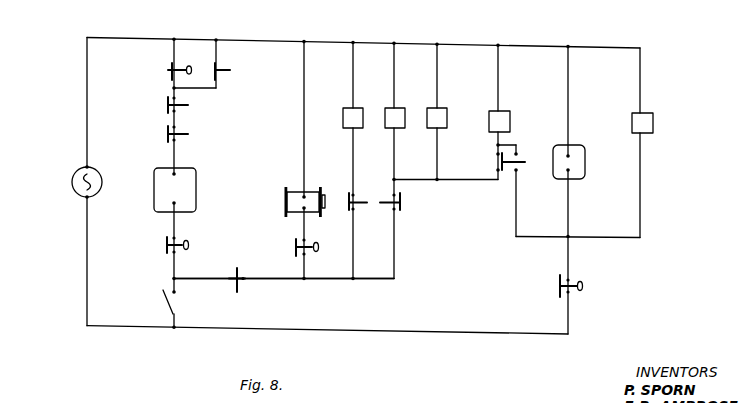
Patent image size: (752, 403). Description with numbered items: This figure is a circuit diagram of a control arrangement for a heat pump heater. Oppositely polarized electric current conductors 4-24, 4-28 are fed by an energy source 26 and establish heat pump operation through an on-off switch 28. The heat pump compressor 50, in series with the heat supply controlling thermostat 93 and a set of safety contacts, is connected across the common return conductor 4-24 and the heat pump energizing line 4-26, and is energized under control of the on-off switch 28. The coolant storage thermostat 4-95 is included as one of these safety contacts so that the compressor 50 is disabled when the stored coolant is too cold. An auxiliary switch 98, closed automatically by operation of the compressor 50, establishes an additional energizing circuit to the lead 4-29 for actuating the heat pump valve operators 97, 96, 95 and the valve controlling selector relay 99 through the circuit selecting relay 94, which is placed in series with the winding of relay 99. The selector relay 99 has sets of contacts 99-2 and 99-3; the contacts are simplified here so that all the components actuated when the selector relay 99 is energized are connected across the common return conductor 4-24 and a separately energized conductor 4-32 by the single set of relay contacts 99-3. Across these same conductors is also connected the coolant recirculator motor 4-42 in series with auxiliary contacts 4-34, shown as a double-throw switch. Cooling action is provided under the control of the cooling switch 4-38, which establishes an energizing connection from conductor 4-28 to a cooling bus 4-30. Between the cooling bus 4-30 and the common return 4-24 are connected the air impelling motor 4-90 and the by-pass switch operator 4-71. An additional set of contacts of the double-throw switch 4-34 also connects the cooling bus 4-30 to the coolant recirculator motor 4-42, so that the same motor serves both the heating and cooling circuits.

The electric current conductor 4-24 is at (258, 41).
The electric current conductor 4-28 is at (368, 330).
The energy source 26 is at (75, 170).
The coolant storage thermostat 4-95 is at (170, 67).
The heat pump compressor 50 is at (199, 187).
The heat supply controlling thermostat 93 is at (167, 243).
The heat pump energizing line 4-26 is at (200, 278).
The on-off switch 28 is at (177, 302).
The auxiliary switch 98 is at (240, 272).
The lead 4-29 is at (288, 282).
The circuit selecting relay 94 is at (294, 246).
The valve controlling selector relay 99 is at (296, 192).
The relay contacts 99-2 is at (349, 209).
The relay contacts 99-3 is at (402, 207).
The heat pump valve operator 97 is at (350, 108).
The heat pump valve operator 96 is at (392, 108).
The heat pump valve operator 95 is at (434, 108).
The separately energized conductor 4-32 is at (451, 181).
The auxiliary contacts 4-34 is at (506, 172).
The coolant recirculator motor 4-42 is at (504, 111).
The air impelling motor 4-90 is at (580, 149).
The cooling switch 4-38 is at (562, 286).
The cooling bus 4-30 is at (601, 238).
The by-pass switch operator 4-71 is at (650, 114).